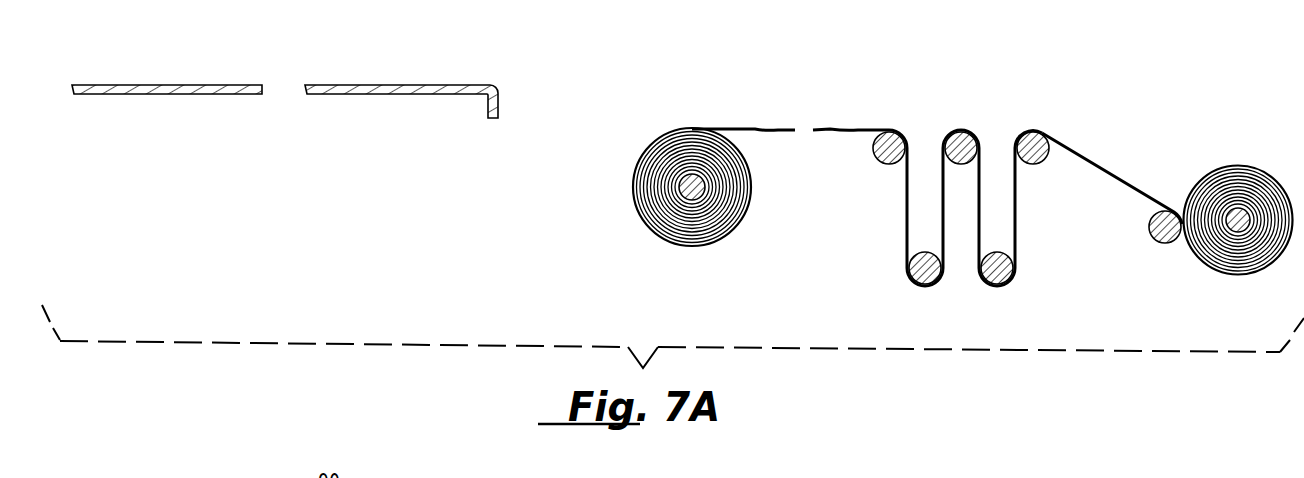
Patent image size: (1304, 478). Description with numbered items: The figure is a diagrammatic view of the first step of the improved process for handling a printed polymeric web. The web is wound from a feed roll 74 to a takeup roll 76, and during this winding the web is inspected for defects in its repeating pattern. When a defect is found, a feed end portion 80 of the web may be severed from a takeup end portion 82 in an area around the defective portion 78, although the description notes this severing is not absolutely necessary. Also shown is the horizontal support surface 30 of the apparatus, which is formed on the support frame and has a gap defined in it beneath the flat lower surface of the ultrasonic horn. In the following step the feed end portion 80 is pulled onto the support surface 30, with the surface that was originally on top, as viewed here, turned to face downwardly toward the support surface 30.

The horizontal support surface 30 is at (423, 86).
The feed roll 74 is at (663, 137).
The takeup roll 76 is at (1245, 166).
The defective portion 78 is at (857, 129).
The feed end portion 80 is at (767, 128).
The takeup end portion 82 is at (1070, 145).